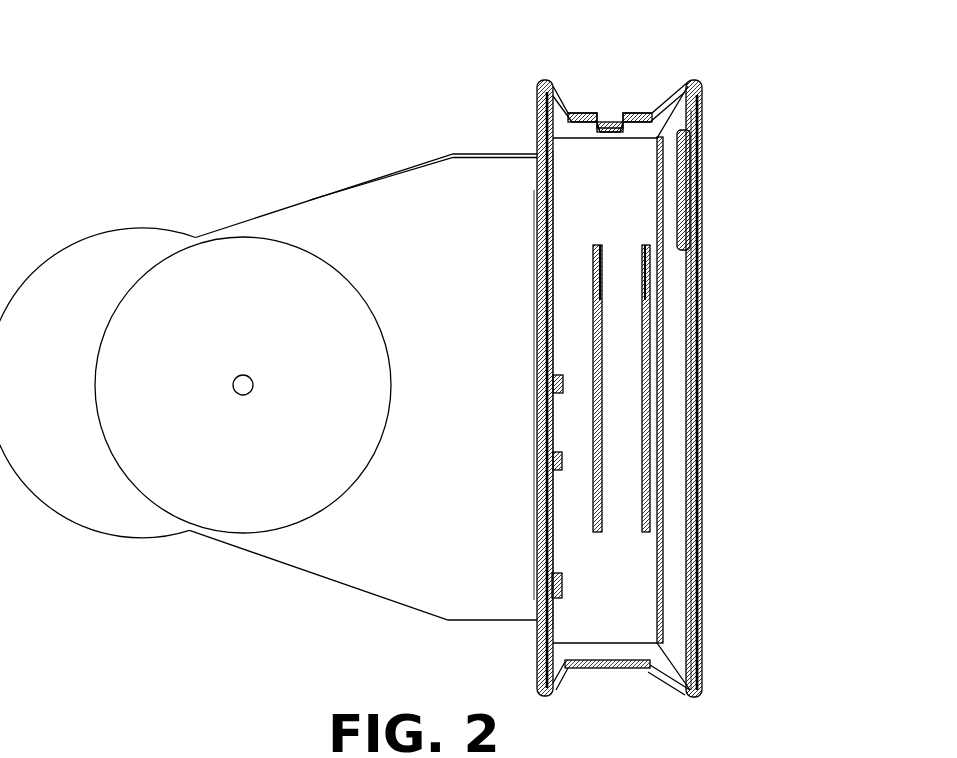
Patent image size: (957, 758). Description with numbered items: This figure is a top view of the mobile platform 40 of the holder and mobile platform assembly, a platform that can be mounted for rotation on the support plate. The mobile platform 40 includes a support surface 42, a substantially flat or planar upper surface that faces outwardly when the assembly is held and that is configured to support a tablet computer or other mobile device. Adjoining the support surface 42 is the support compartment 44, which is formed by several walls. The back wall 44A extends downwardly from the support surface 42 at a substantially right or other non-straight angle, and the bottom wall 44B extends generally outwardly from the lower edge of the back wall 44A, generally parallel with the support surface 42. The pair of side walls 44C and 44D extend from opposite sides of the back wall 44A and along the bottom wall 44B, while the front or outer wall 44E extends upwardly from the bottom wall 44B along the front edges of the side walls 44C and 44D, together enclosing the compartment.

The mobile platform 40 is at (760, 105).
The support surface 42 is at (330, 218).
The support compartment 44 is at (611, 396).
The back wall 44A is at (540, 137).
The bottom wall 44B is at (594, 390).
The side wall 44C is at (615, 665).
The side wall 44D is at (610, 125).
The front or outer wall 44E is at (695, 402).